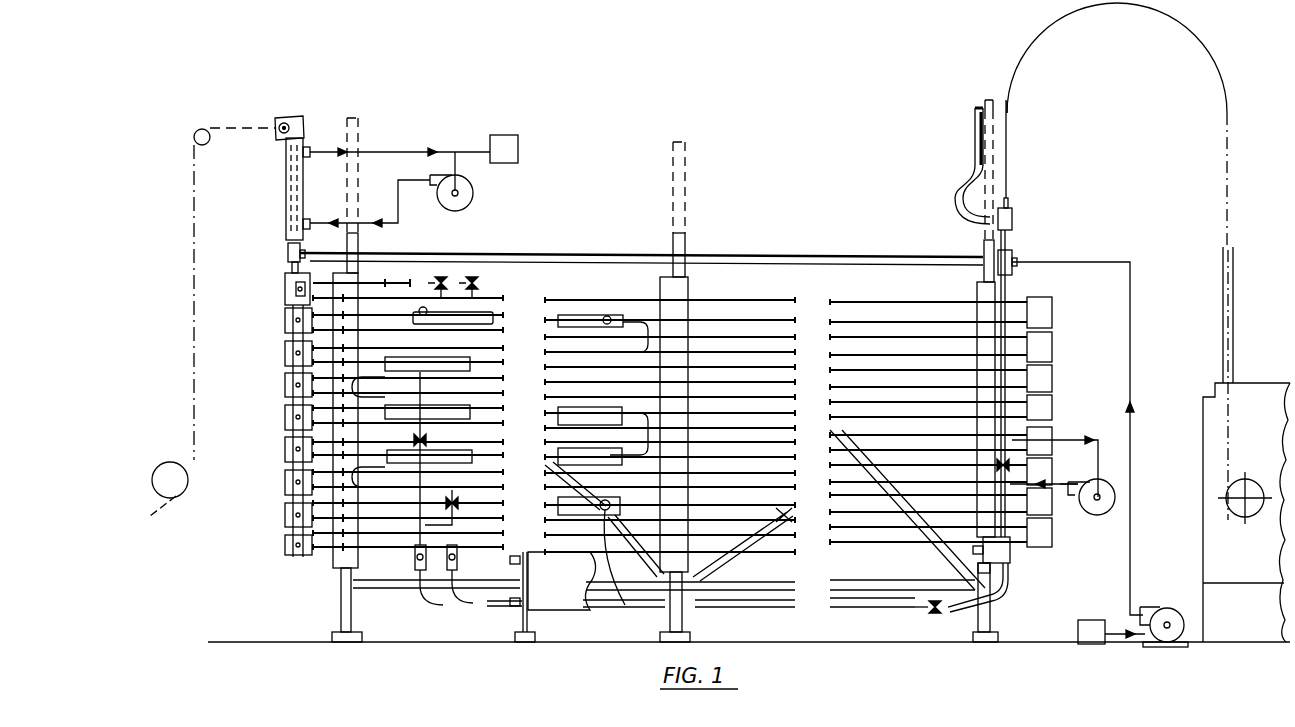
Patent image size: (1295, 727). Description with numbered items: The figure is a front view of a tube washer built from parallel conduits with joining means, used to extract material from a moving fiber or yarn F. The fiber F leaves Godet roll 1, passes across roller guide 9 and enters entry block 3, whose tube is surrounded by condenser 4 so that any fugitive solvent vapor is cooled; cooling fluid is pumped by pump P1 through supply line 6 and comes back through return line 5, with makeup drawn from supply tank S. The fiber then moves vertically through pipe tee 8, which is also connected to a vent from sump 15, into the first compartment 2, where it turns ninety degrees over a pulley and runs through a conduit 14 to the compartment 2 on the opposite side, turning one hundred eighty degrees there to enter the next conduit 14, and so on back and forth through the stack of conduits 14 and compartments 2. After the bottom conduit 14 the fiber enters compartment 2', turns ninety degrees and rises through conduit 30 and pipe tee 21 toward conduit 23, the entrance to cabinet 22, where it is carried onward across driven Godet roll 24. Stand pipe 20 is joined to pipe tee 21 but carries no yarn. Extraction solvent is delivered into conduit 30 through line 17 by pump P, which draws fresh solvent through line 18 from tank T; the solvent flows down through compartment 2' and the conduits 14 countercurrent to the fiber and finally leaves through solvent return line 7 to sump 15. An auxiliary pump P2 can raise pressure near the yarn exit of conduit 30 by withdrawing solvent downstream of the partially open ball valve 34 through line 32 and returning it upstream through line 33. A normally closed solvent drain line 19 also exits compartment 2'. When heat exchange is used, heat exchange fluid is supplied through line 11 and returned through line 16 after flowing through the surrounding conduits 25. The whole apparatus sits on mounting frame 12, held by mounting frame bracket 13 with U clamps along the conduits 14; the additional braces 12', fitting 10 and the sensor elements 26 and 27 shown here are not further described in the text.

The Godet roll 1 is at (170, 462).
The compartment 2 is at (671, 414).
The compartment 2' is at (1012, 569).
The entry block 3 is at (300, 116).
The condenser 4 is at (286, 200).
The return line 5 is at (400, 150).
The supply line 6 is at (397, 207).
The solvent return line 7 is at (406, 284).
The pipe tee 8 is at (288, 254).
The roller guide 9 is at (210, 146).
The lower fitting 10 is at (983, 565).
The line 11 is at (625, 605).
The mounting frame 12 is at (649, 374).
The horizontal and diagonal braces 12' is at (642, 397).
The mounting frame bracket 13 is at (333, 565).
The conduit 14 is at (545, 284).
The sump 15 is at (555, 612).
The line 16 is at (430, 318).
The line 17 is at (1131, 464).
The line 18 is at (1120, 630).
The solvent drain line 19 is at (992, 600).
The stand pipe 20 is at (958, 192).
The pipe tee 21 is at (1012, 219).
The cabinet 22 is at (1203, 420).
The conduit 23 is at (1223, 331).
The driven Godet roll 24 is at (1233, 520).
The surrounding conduit 25 is at (472, 362).
The sensor 26 is at (605, 315).
The U-shaped pipe 27 is at (640, 318).
The conduit 30 is at (1014, 288).
The line 32 is at (1060, 440).
The line 33 is at (1072, 500).
The ball valve 34 is at (1012, 468).
The fiber F is at (228, 127).
The pump P is at (1150, 600).
The pump P1 is at (473, 193).
The auxiliary pump P2 is at (1108, 512).
The supply tank S is at (504, 149).
The tank T is at (1091, 632).